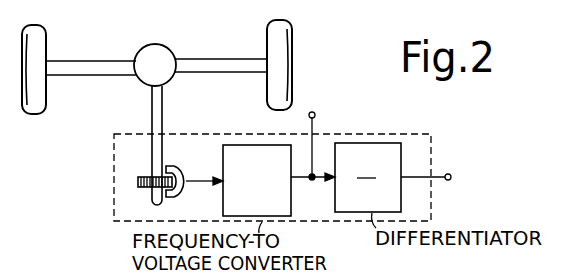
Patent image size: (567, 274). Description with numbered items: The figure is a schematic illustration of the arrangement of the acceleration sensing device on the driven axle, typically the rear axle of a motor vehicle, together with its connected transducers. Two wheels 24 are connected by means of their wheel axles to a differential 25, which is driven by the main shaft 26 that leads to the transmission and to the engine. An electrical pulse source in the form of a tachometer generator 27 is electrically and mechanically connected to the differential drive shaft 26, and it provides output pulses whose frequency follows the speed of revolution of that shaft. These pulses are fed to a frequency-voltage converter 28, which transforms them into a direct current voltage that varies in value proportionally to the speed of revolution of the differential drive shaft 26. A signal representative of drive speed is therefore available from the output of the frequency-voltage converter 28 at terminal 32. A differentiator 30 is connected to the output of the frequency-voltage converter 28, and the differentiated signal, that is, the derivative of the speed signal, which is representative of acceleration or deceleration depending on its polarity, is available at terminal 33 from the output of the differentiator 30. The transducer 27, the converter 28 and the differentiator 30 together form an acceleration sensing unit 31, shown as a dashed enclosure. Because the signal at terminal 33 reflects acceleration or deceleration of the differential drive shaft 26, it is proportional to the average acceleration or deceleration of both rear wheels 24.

The wheels 24 is at (33, 53).
The differential 25 is at (160, 57).
The main shaft 26 is at (162, 110).
The tachometer generator 27 is at (181, 190).
The frequency-voltage converter 28 is at (283, 208).
The differentiator 30 is at (382, 148).
The acceleration sensing unit 31 is at (430, 141).
The terminal 32 is at (315, 114).
The terminal 33 is at (451, 180).